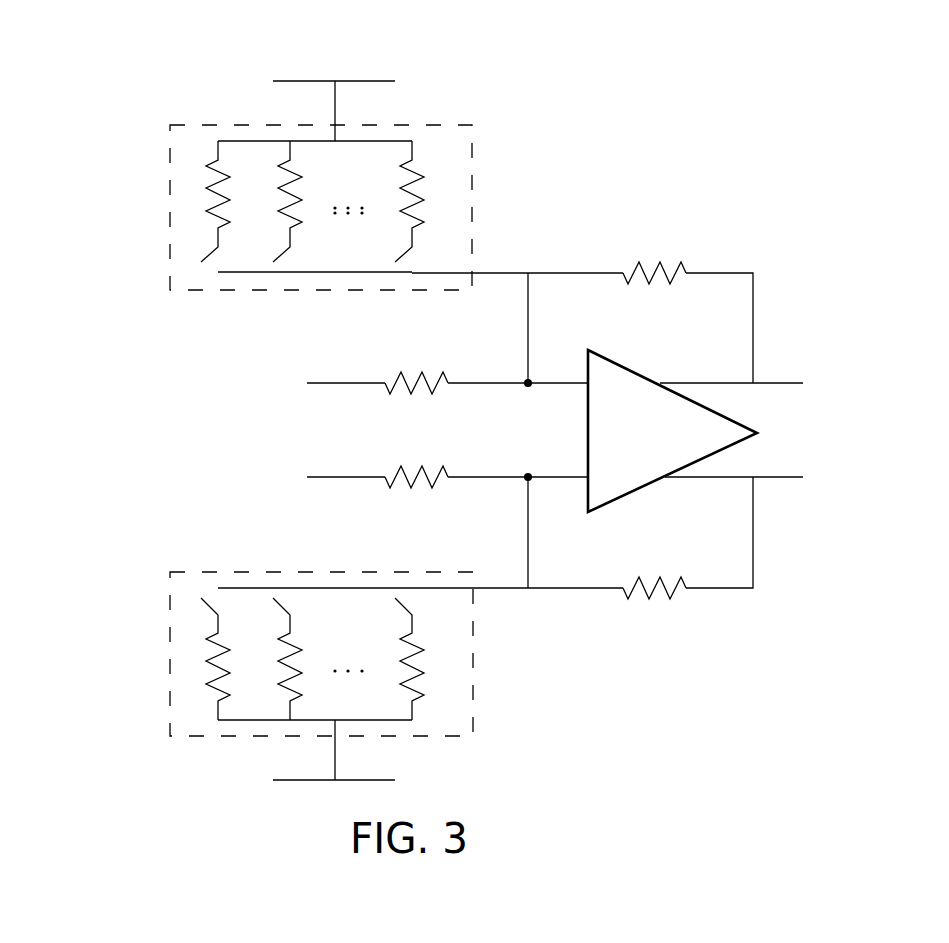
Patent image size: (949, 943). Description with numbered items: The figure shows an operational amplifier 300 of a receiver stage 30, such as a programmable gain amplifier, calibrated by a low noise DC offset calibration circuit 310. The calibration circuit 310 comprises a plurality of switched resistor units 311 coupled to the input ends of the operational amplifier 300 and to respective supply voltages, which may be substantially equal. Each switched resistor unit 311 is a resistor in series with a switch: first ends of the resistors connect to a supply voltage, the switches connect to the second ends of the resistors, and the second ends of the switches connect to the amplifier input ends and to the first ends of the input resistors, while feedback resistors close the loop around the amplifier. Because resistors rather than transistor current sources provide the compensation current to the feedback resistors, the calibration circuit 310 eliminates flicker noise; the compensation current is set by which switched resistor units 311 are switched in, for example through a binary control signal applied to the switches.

The receiver stage 30 is at (825, 100).
The operational amplifier 300 is at (732, 417).
The low noise DC offset calibration circuit 310 is at (170, 188).
The switched resistor unit 311 is at (413, 193).